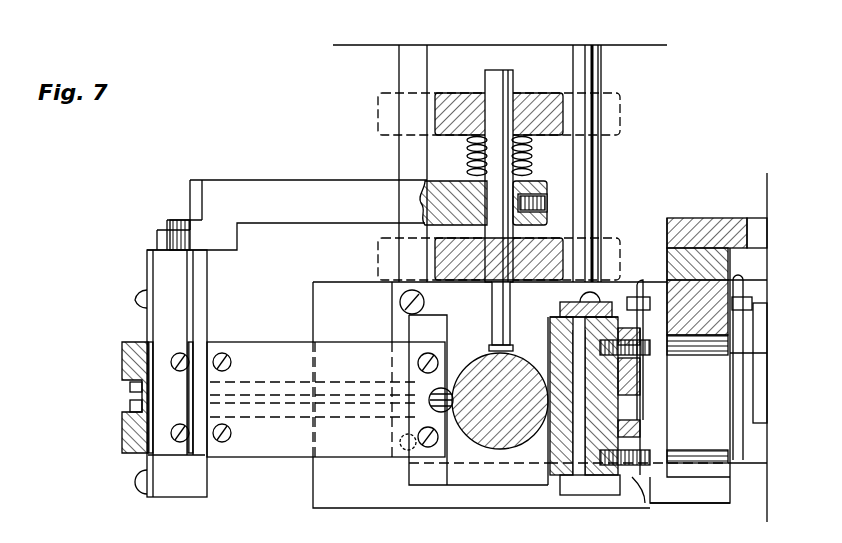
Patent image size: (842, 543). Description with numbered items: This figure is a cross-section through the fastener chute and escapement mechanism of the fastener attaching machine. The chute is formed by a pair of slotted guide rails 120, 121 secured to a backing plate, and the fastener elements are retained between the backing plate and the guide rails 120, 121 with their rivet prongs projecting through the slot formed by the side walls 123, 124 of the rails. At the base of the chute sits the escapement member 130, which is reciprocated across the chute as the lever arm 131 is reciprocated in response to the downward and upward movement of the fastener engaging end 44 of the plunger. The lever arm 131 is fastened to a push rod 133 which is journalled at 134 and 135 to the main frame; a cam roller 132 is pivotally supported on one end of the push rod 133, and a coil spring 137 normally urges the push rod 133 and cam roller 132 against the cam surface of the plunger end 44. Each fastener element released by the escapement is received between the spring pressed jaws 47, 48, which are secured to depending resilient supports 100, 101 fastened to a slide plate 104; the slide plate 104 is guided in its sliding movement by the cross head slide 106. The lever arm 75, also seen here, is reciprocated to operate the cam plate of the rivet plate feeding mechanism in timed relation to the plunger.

The fastener engaging end 44 is at (500, 414).
The spring pressed jaw 47 is at (480, 475).
The spring pressed jaw 48 is at (459, 310).
The lever arm 75 is at (718, 211).
The resilient support 100 is at (548, 480).
The resilient support 101 is at (615, 327).
The slide plate 104 is at (655, 503).
The cross head slide 106 is at (660, 393).
The slotted guide rail 120 is at (124, 366).
The slotted guide rail 121 is at (128, 440).
The side wall 123 is at (130, 391).
The side wall 124 is at (130, 410).
The escapement member 130 is at (195, 293).
The lever arm 131 is at (305, 185).
The cam roller 132 is at (492, 345).
The push rod 133 is at (513, 78).
The journal 134 is at (560, 250).
The journal 135 is at (452, 108).
The coil spring 137 is at (532, 157).